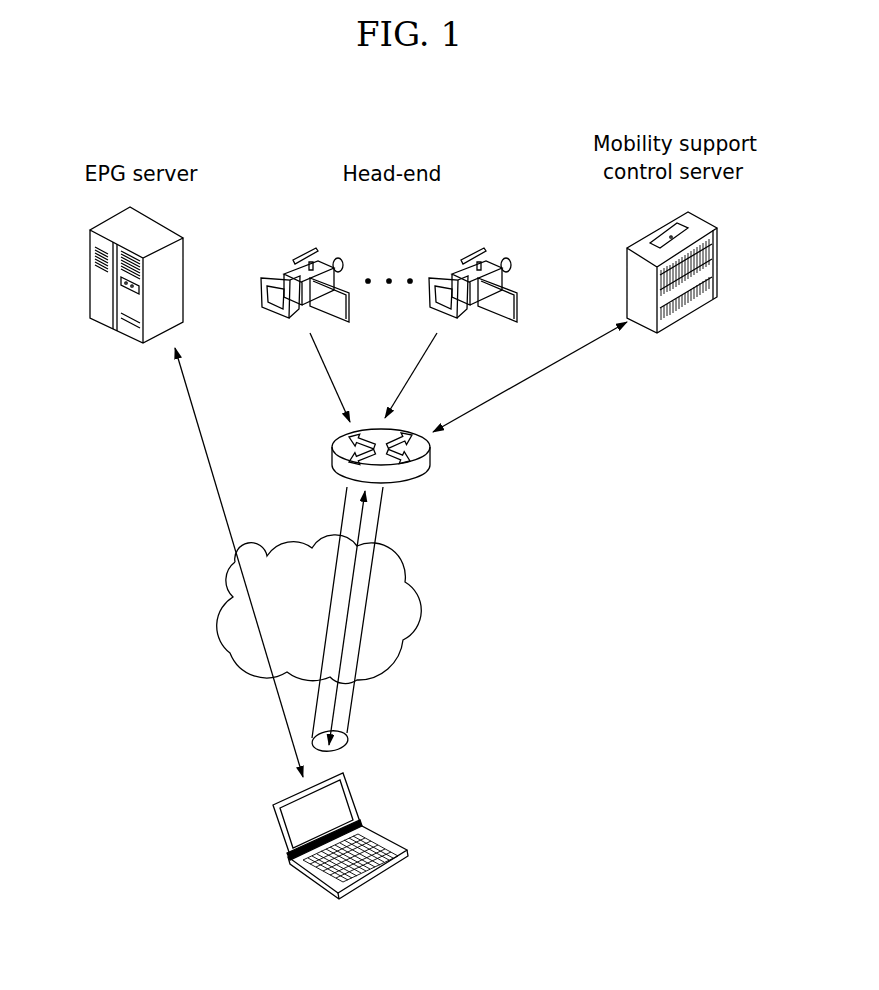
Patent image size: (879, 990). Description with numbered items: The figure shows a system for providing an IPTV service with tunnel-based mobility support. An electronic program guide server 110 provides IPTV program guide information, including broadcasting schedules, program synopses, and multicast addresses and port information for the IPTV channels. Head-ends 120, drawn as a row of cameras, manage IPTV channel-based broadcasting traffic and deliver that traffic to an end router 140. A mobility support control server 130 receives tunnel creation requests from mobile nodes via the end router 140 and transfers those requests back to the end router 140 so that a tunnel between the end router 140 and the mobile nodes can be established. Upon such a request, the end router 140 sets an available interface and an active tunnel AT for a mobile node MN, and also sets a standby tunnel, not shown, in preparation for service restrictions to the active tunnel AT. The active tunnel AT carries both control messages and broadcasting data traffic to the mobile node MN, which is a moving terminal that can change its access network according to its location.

The electronic program guide (EPG) server 110 is at (123, 328).
The head-end 120 is at (287, 278).
The mobility support control server 130 is at (680, 318).
The end router 140 is at (430, 462).
The active tunnel AT is at (355, 707).
The mobile node MN is at (346, 844).